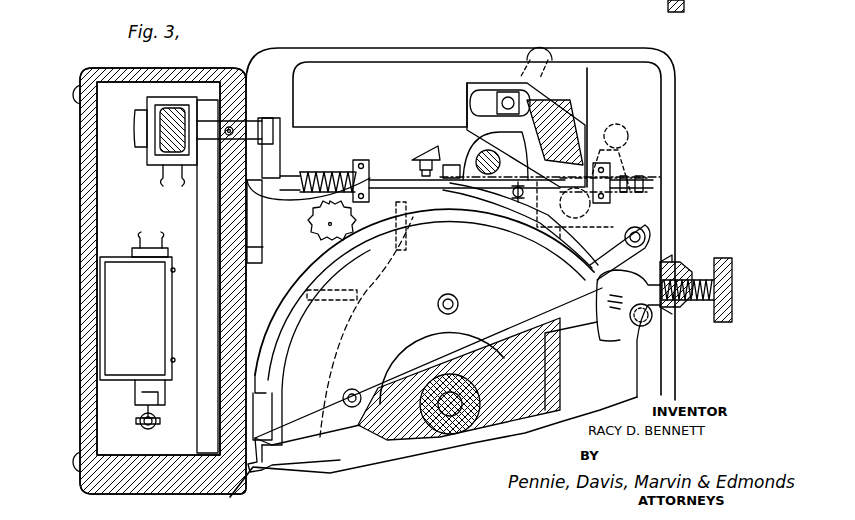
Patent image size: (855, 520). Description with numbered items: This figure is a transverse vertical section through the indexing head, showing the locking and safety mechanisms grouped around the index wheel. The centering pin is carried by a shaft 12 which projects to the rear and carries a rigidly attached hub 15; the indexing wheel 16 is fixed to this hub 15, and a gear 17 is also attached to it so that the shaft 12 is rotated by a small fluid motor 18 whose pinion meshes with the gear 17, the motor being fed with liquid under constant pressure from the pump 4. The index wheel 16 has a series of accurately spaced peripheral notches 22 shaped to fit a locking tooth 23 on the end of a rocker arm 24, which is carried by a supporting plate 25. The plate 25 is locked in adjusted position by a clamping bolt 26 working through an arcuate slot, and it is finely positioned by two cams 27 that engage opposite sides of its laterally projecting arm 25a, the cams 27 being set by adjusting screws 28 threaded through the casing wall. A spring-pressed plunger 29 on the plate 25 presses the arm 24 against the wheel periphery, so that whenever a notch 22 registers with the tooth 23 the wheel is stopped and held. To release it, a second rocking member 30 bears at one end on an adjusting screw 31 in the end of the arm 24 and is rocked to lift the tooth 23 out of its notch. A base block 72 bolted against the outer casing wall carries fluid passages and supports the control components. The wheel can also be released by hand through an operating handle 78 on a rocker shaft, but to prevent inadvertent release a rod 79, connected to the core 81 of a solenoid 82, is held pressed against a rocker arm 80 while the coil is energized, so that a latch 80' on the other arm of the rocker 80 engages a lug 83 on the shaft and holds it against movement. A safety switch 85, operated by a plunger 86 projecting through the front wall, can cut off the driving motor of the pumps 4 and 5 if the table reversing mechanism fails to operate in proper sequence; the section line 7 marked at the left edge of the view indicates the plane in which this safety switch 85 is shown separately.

The pump 4 is at (457, 0).
The pump 5 is at (642, 90).
The section line 7- 7 is at (100, 0).
The shaft 12 is at (459, 379).
The hub 15 is at (418, 358).
The indexing wheel 16 is at (290, 303).
The gear 17 is at (545, 322).
The fluid motor 18 is at (292, 268).
The peripheral notches 22 is at (450, 205).
The locking tooth 23 is at (565, 262).
The rocker arm 24 is at (655, 230).
The supporting plate 25 is at (470, 78).
The laterally projecting arm 25a is at (721, 358).
The clamping bolt 26 is at (548, 52).
The cams 27 is at (670, 268).
The adjusting screws 28 is at (732, 270).
The spring-pressed plunger 29 is at (611, 143).
The second rocking member 30 is at (425, 150).
The adjusting screw 31 is at (455, 152).
The base block 72 is at (196, 438).
The operating handle 78 is at (628, 142).
The rod 79 is at (382, 176).
The rocker arm 80 is at (651, 176).
The latch 80' is at (672, 279).
The core 81 is at (220, 117).
The solenoid 82 is at (163, 140).
The lug 83 is at (650, 195).
The safety switch 85 is at (110, 345).
The plunger 86 is at (145, 426).